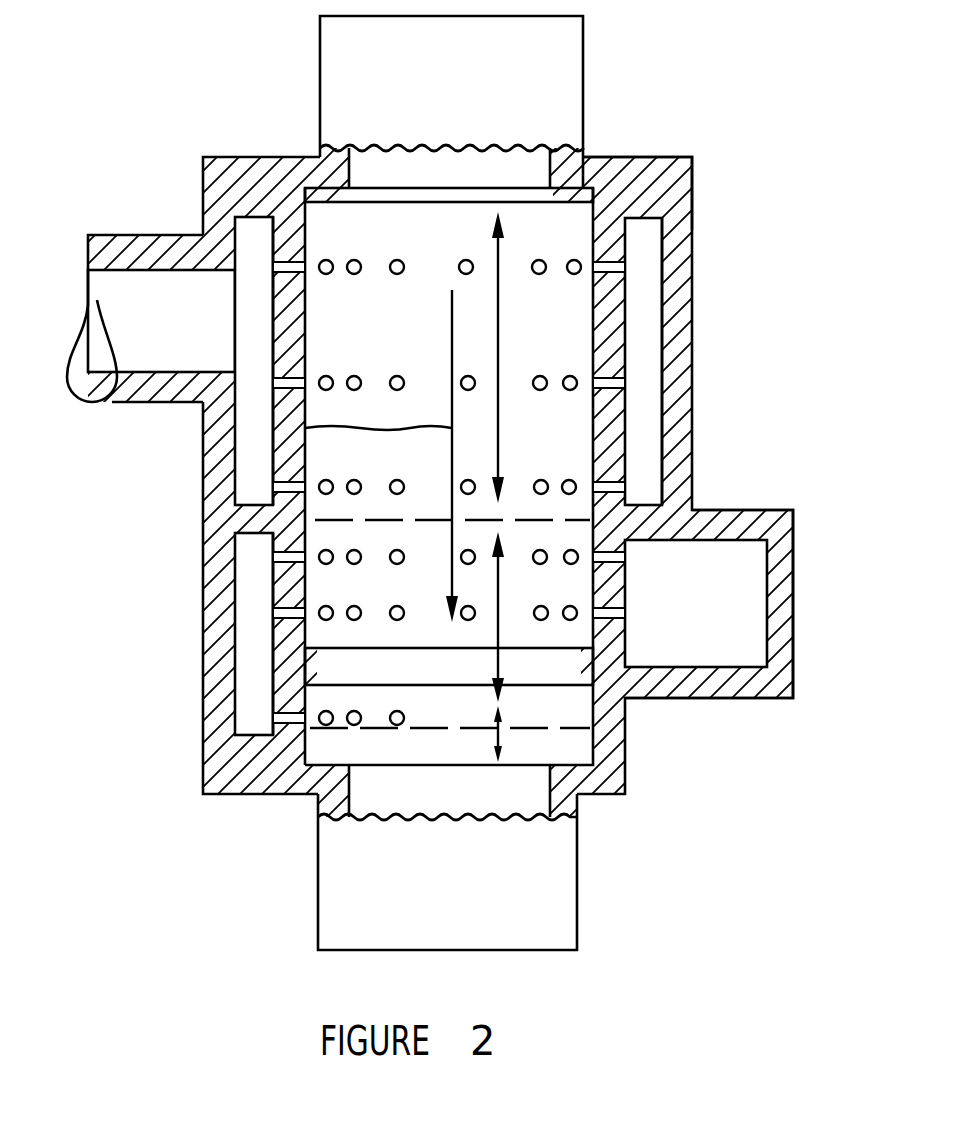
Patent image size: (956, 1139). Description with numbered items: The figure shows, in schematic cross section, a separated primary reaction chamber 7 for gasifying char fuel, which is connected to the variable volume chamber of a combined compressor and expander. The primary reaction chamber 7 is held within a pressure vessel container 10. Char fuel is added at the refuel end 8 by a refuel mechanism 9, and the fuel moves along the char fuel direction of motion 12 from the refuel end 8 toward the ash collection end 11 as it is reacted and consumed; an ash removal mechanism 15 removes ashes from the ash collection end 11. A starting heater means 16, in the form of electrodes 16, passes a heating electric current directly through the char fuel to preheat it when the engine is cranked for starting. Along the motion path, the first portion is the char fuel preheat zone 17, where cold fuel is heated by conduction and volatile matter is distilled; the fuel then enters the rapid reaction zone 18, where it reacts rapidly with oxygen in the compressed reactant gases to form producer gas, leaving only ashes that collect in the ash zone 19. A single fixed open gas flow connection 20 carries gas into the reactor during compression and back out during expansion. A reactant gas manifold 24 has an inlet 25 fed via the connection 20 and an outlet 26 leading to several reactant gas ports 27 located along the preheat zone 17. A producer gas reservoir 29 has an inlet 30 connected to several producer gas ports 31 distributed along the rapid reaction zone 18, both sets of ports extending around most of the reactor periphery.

The primary reaction chamber 7 is at (565, 230).
The refuel end 8 is at (390, 220).
The refuel mechanism 9 is at (528, 97).
The pressure vessel container 10 is at (590, 167).
The ash collection end 11 is at (555, 748).
The char fuel direction of motion 12 is at (305, 430).
The ash removal mechanism 15 is at (545, 905).
The starting heater means 16 is at (243, 293).
The char fuel preheat zone 17 is at (498, 355).
The rapid reaction zone 18 is at (500, 592).
The ash zone 19 is at (500, 748).
The fixed open gas flow connection 20 is at (173, 292).
The reactant gas manifold 24 is at (252, 338).
The inlet 25 is at (242, 290).
The outlet 26 is at (258, 355).
The reactant gas ports 27 is at (275, 362).
The producer gas reservoir 29 is at (247, 600).
The inlet 30 is at (652, 608).
The producer gas ports 31 is at (318, 614).